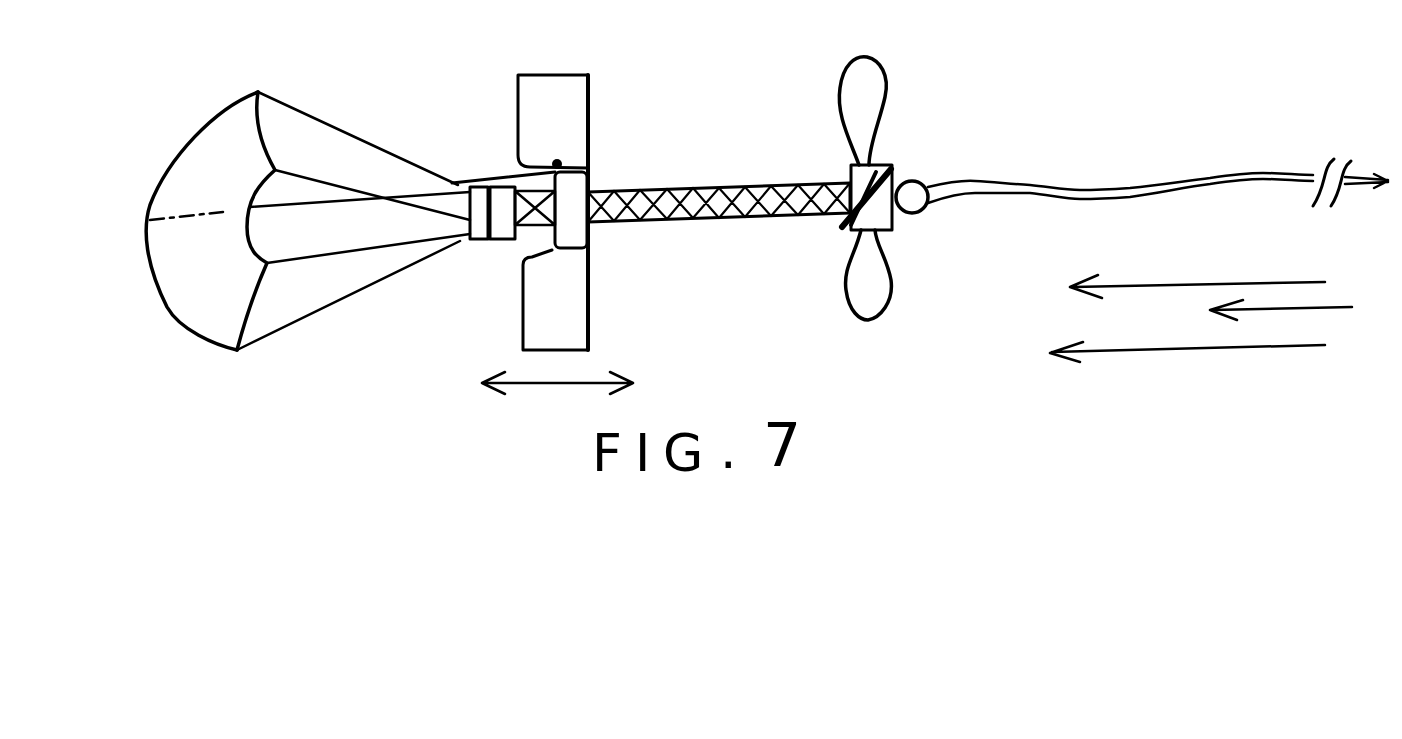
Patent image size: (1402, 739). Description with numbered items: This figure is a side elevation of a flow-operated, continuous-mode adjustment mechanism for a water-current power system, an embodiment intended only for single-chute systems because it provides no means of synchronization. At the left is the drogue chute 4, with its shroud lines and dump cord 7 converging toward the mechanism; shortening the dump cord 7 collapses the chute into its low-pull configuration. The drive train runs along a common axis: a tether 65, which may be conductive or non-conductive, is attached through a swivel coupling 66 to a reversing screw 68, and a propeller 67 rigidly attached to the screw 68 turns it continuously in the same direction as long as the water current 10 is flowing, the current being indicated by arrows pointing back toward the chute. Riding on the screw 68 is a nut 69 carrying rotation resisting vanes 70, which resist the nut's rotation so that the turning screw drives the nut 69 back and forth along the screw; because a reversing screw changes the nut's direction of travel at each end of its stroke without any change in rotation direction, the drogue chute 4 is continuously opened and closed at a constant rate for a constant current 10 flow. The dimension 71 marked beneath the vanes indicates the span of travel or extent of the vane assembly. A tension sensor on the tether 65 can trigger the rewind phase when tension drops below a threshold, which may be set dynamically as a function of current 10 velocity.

The drogue chute 4 is at (183, 293).
The dump cord 7 is at (395, 183).
The water current 10 is at (1201, 318).
The tether 65 is at (1097, 177).
The swivel coupling 66 is at (923, 168).
The propeller 67 is at (888, 120).
The reversing screw 68 is at (713, 173).
The nut 69 is at (570, 232).
The rotation resisting vanes 70 is at (567, 121).
The fin width dimension 71 is at (557, 397).